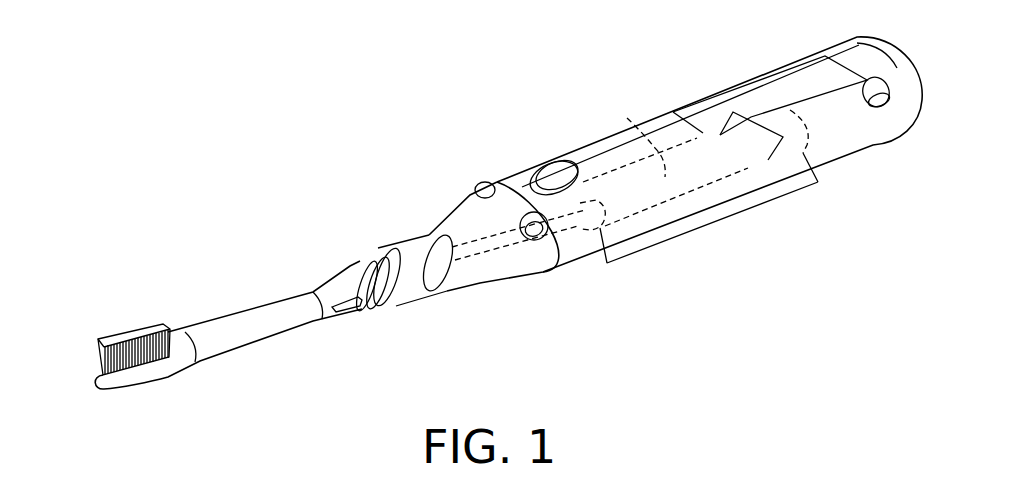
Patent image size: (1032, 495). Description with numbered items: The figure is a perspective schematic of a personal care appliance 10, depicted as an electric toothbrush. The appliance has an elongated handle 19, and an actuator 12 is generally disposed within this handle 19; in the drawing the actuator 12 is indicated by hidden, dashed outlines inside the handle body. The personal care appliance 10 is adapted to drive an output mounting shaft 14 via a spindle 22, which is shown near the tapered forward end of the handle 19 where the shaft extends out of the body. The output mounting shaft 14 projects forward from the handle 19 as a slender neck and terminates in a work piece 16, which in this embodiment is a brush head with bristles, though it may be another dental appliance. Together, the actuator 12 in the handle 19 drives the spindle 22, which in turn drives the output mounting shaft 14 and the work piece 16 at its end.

The personal care appliance 10 is at (354, 195).
The actuator 12 is at (627, 118).
The output mounting shaft 14 is at (246, 331).
The work piece 16 is at (86, 321).
The handle 19 is at (858, 152).
The spindle 22 is at (503, 232).